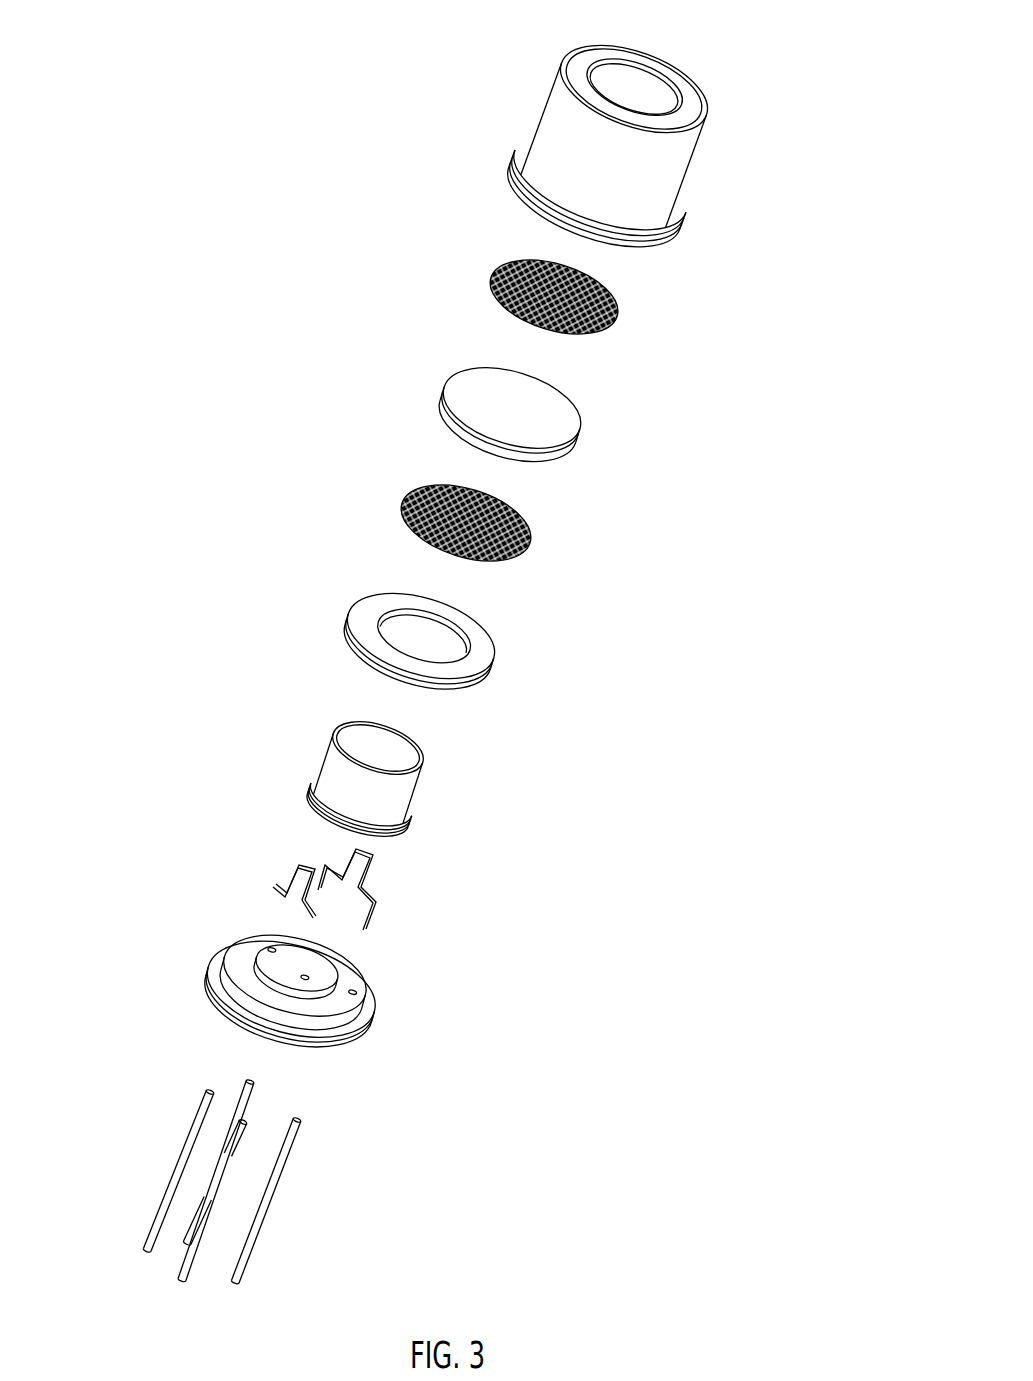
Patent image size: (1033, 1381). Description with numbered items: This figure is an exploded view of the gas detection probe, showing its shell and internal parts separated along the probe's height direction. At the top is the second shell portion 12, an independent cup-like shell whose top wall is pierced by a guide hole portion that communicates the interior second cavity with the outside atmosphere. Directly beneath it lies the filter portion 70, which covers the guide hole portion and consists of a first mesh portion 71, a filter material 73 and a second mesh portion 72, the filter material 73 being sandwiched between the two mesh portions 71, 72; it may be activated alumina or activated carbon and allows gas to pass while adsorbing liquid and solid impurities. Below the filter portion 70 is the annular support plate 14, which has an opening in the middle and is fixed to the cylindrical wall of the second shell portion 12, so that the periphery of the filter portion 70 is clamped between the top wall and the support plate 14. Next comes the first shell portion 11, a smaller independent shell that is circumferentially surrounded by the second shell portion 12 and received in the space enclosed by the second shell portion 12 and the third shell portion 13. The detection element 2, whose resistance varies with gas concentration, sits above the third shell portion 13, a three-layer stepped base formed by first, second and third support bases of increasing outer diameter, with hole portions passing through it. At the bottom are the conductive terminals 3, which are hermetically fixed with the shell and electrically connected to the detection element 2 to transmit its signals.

The detection element 2 is at (262, 852).
The conductive terminals 3 is at (263, 1216).
The first shell portion 11 is at (393, 797).
The second shell portion 12 is at (640, 133).
The third shell portion 13 is at (315, 984).
The support plate 14 is at (478, 657).
The filter portion 70 is at (295, 278).
The first mesh portion 71 is at (490, 272).
The second mesh portion 72 is at (424, 490).
The filter material 73 is at (450, 385).